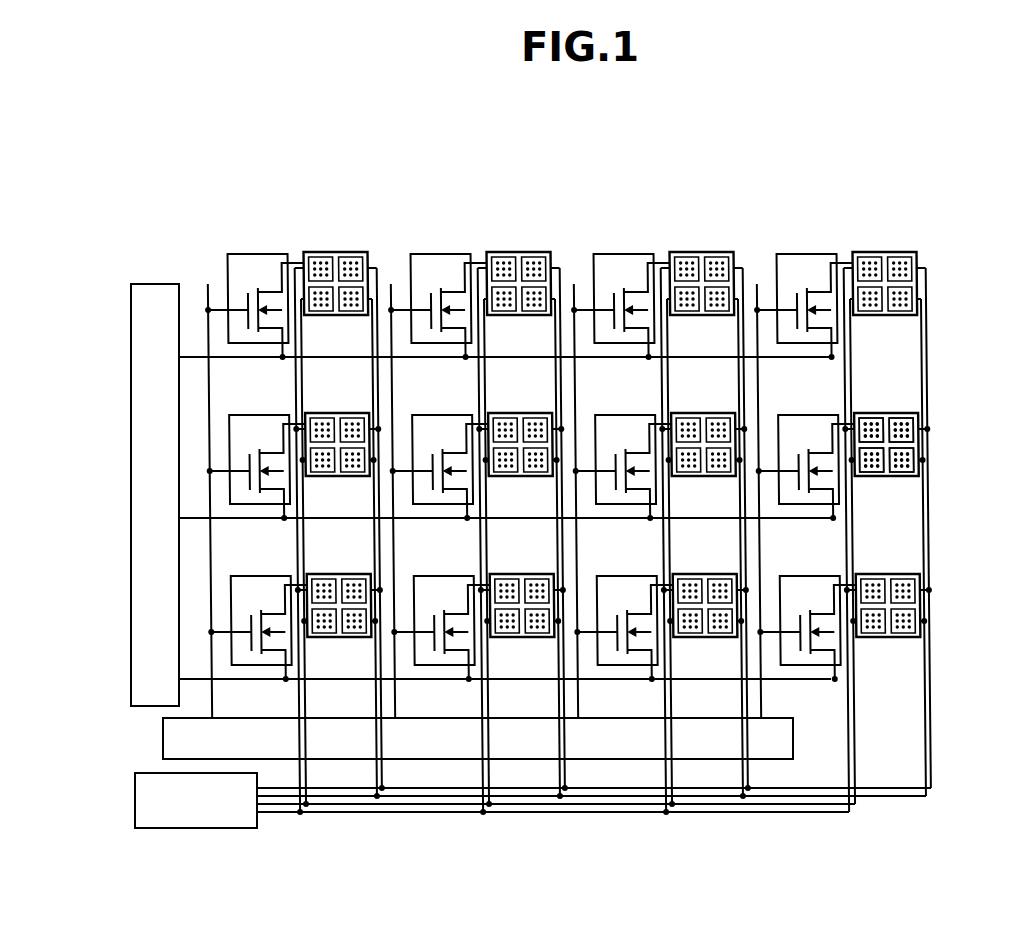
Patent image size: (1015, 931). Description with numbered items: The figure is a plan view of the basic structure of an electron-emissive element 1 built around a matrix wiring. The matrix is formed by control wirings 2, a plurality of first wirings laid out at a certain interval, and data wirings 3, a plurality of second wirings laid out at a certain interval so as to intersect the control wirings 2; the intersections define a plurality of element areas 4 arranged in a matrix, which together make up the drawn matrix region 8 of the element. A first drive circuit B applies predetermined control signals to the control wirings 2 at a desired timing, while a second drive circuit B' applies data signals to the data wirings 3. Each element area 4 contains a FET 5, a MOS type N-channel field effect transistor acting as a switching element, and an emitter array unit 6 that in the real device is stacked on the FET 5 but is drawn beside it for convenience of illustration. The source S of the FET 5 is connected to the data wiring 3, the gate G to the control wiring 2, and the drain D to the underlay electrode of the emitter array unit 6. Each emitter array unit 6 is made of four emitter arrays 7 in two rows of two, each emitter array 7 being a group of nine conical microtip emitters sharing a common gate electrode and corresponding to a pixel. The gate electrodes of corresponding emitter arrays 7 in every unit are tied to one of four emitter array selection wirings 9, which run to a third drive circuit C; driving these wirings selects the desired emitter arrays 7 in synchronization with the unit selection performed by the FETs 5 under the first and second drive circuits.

The electron-emissive element 1 is at (812, 177).
The control wirings 2 is at (475, 444).
The data wirings 3 is at (453, 519).
The element areas 4 is at (871, 571).
The FET 5 is at (813, 576).
The emitter array unit 6 is at (651, 395).
The emitter array 7 is at (873, 476).
The display region 8 is at (549, 150).
The emitter array selection wirings 9 is at (820, 788).